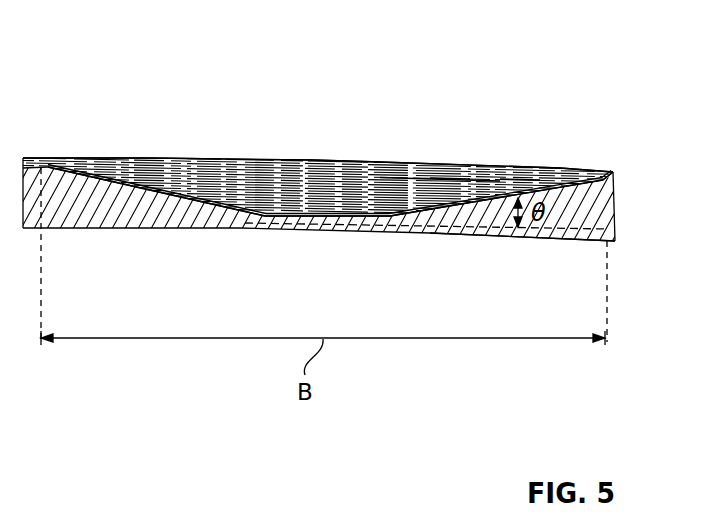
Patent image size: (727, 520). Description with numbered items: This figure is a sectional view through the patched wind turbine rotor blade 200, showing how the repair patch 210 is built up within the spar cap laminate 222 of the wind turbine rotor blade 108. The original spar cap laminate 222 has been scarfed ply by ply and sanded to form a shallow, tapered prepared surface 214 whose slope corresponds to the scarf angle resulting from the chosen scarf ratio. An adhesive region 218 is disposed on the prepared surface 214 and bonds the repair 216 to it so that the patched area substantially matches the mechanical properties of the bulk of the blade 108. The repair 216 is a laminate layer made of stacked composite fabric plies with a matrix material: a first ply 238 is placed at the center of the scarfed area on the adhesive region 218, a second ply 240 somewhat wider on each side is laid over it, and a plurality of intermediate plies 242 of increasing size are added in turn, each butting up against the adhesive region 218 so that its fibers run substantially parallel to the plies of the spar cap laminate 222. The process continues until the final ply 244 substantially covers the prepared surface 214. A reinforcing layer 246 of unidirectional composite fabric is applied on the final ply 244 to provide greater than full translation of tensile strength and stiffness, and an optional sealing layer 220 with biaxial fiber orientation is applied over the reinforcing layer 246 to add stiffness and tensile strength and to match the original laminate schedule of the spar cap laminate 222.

The patched wind turbine rotor blade 200 is at (575, 52).
The repair patch 210 is at (148, 150).
The sealing layer 220 is at (312, 160).
The spar cap laminate 222 is at (97, 211).
The prepared surface 214 is at (140, 204).
The repair 216 is at (188, 190).
The first ply 238 is at (317, 217).
The second ply 240 is at (386, 217).
The adhesive region 218 is at (563, 176).
The intermediate plies 242 is at (392, 178).
The final ply 244 is at (448, 178).
The reinforcing layer 246 is at (520, 178).
The wind turbine rotor blade 108 is at (578, 268).